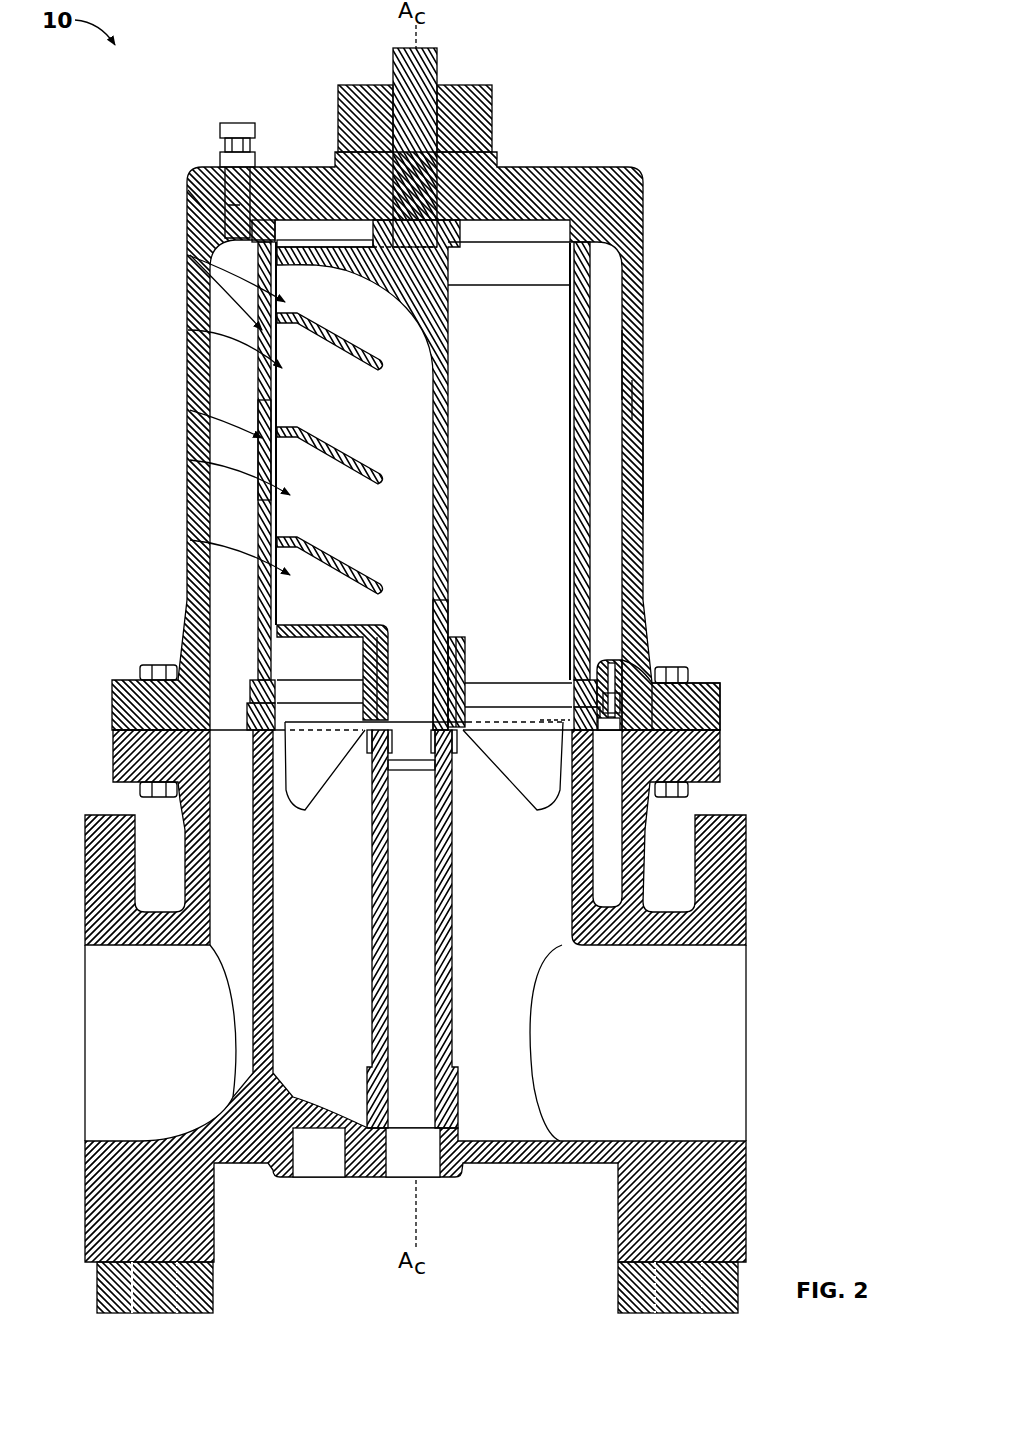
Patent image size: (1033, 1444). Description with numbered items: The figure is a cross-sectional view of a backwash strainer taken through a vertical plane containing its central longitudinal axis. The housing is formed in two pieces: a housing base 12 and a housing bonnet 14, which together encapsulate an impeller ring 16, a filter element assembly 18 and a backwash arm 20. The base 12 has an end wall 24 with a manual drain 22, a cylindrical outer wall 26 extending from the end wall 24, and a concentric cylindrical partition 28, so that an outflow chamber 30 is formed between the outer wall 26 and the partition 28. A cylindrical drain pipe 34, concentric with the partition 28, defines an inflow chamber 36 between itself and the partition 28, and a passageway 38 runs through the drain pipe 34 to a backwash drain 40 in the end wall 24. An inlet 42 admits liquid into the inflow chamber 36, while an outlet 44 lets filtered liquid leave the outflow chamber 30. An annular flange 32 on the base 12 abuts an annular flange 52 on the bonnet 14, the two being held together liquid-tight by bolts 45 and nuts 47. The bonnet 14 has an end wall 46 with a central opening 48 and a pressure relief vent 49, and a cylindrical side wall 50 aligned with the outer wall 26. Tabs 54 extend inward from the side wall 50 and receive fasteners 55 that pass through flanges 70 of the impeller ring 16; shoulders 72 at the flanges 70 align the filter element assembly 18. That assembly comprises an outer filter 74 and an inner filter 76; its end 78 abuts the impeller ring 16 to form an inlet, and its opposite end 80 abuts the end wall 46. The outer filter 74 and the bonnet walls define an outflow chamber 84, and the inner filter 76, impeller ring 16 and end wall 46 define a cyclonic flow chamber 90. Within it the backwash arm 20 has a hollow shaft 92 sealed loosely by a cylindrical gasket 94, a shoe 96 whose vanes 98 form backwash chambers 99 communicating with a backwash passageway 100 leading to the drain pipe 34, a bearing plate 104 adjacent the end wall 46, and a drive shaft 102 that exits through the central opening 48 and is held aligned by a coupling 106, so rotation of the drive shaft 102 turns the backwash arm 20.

The housing base 12 is at (422, 996).
The housing bonnet 14 is at (648, 440).
The impeller ring 16 is at (310, 690).
The filter element assembly 18 is at (255, 318).
The backwash arm 20 is at (452, 525).
The manual drain 22 is at (315, 1170).
The end wall 24 is at (552, 1165).
The cylindrical outer wall 26 is at (200, 885).
The cylindrical partition 28 is at (270, 870).
The outflow chamber 30 is at (225, 858).
The annular flange 32 is at (712, 748).
The cylindrical drain pipe 34 is at (373, 972).
The inflow chamber 36 is at (268, 927).
The passageway 38 is at (410, 1030).
The backwash drain 40 is at (402, 1170).
The inlet 42 is at (735, 1055).
The outlet 44 is at (110, 1048).
The bolt 45 is at (155, 665).
The end wall 46 is at (568, 175).
The nut 47 is at (145, 790).
The central opening 48 is at (492, 112).
The pressure relief vent 49 is at (222, 163).
The cylindrical side wall 50 is at (635, 355).
The annular flange 52 is at (715, 700).
The tab 54 is at (635, 675).
The fastener 55 is at (625, 710).
The flange 70 is at (640, 690).
The shoulder 72 is at (610, 662).
The outer filter 74 is at (258, 440).
The inner filter 76 is at (280, 418).
The end 78 is at (262, 438).
The end 80 is at (200, 210).
The outflow chamber 84 is at (230, 380).
The cyclonic flow chamber 90 is at (630, 405).
The shaft 92 is at (445, 625).
The cylindrical gasket 94 is at (465, 660).
The shoe 96 is at (235, 243).
The vane 98 is at (322, 336).
The backwash chamber 99 is at (210, 413).
The backwash passageway 100 is at (420, 660).
The drive shaft 102 is at (428, 80).
The bearing plate 104 is at (448, 235).
The coupling 106 is at (340, 105).